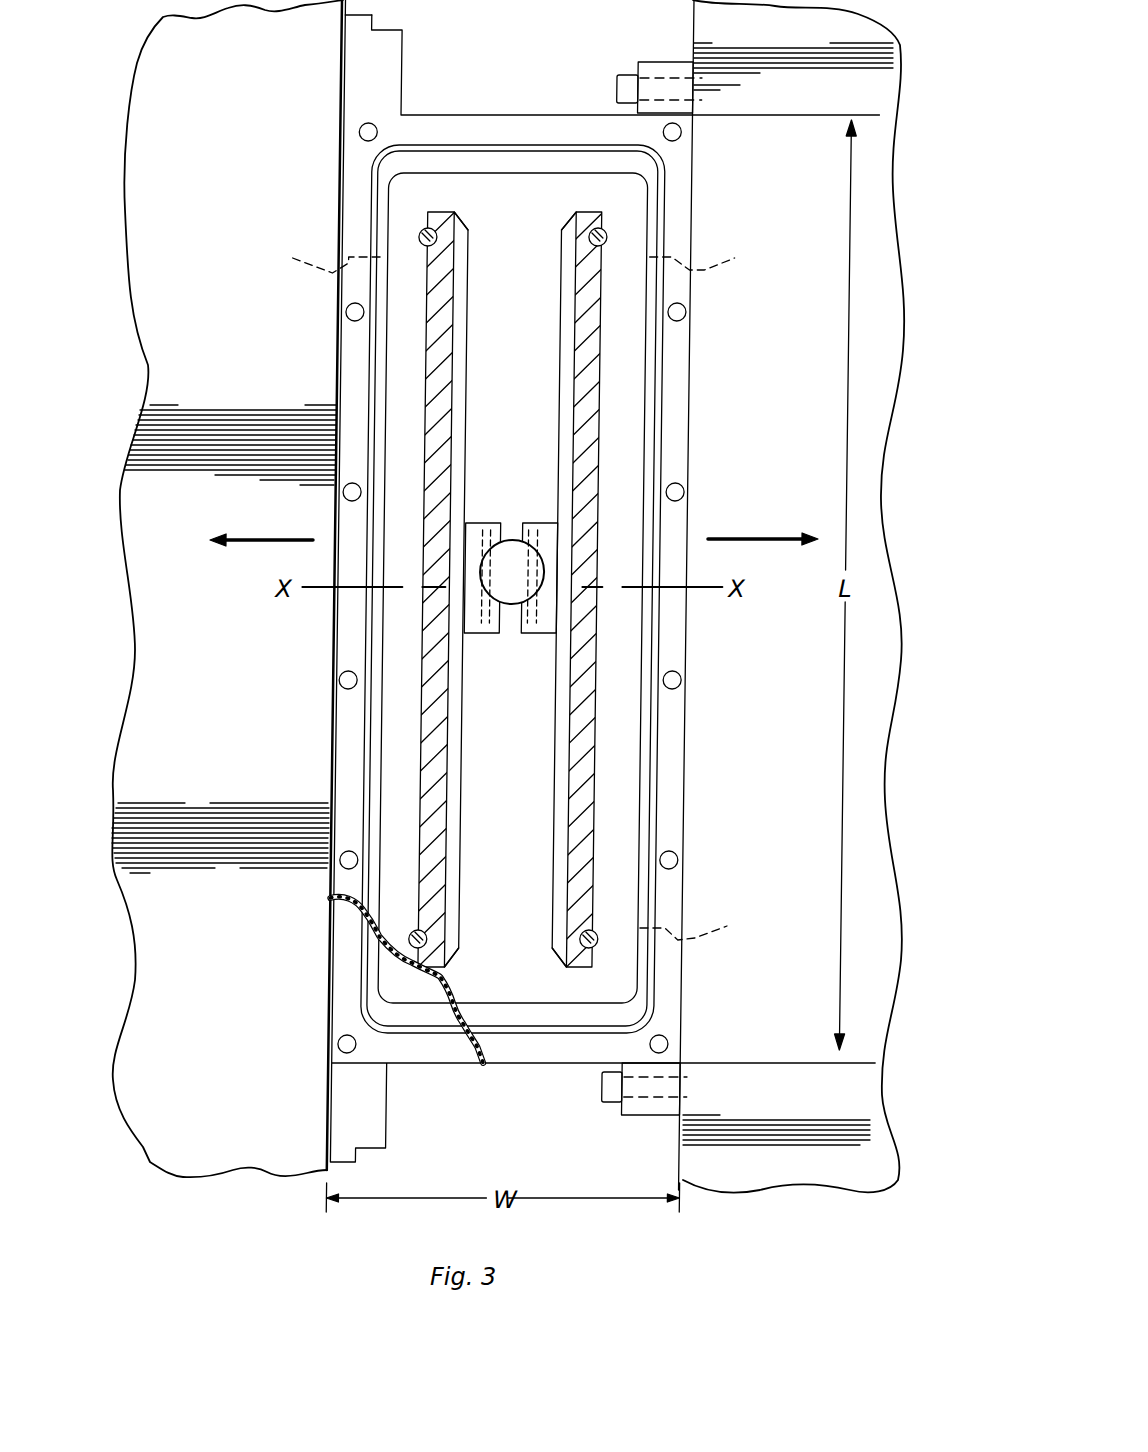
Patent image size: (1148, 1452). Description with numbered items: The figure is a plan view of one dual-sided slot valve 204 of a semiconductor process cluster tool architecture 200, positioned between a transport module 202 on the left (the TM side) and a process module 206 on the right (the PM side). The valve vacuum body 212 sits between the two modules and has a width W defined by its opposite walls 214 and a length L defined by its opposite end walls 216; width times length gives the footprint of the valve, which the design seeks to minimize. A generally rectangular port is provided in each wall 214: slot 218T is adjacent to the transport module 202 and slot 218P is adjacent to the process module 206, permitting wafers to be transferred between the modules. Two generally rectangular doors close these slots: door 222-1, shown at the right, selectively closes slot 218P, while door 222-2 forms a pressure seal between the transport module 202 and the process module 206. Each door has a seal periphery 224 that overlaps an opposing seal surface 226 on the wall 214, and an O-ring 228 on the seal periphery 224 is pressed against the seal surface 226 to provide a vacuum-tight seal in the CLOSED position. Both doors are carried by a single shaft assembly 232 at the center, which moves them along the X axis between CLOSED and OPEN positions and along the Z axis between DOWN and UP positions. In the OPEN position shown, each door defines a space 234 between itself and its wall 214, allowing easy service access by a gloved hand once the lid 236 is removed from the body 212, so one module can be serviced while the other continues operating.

The semiconductor process cluster tool architecture 200 is at (560, 595).
The transport module 202 is at (223, 636).
The dual-sided slot valve 204 is at (481, 100).
The process module 206 is at (793, 800).
The valve vacuum body 212 is at (388, 108).
The wall 214 is at (356, 334).
The end wall 216 is at (575, 123).
The slot 218T is at (305, 267).
The slot 218P is at (722, 598).
The door 222-1 is at (584, 877).
The door 222-2 is at (468, 259).
The seal periphery 224 is at (427, 236).
The seal surface 226 is at (389, 243).
The O-ring 228 is at (415, 255).
The single shaft assembly 232 is at (518, 633).
The space 234 is at (412, 784).
The lid 236 is at (355, 983).